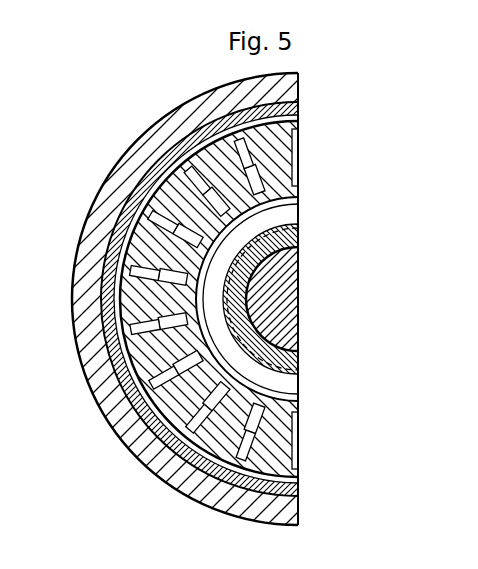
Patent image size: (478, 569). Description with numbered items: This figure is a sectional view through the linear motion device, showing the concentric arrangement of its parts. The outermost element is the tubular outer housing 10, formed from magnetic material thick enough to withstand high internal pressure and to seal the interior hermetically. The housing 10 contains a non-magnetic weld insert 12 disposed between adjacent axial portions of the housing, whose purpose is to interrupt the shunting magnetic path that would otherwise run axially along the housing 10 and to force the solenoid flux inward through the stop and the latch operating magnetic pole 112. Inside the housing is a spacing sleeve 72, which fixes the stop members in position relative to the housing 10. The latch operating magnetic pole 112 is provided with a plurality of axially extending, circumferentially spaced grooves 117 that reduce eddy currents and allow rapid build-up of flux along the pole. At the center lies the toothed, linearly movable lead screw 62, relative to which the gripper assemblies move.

The tubular outer housing 10 is at (73, 293).
The weld insert 12 is at (82, 322).
The lead screw 62 is at (322, 280).
The spacing sleeve 72 is at (290, 230).
The latch operating magnetic pole 112 is at (243, 212).
The grooves 117 is at (258, 181).